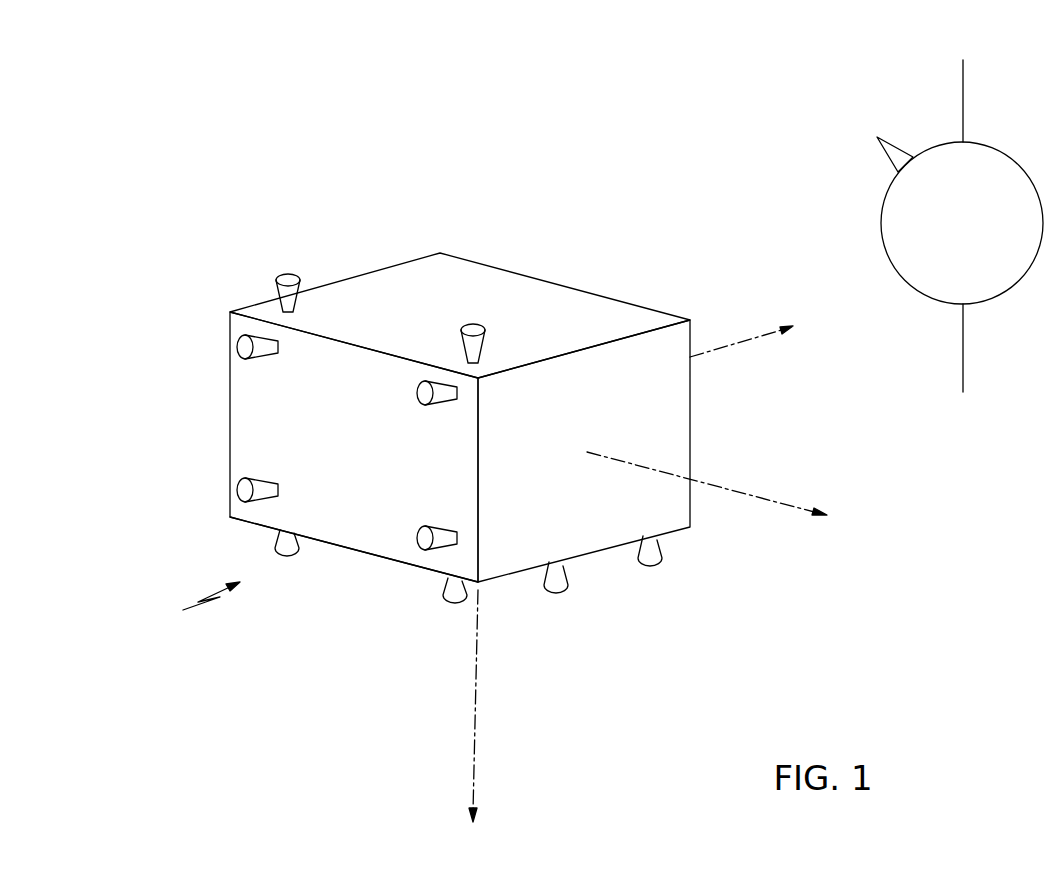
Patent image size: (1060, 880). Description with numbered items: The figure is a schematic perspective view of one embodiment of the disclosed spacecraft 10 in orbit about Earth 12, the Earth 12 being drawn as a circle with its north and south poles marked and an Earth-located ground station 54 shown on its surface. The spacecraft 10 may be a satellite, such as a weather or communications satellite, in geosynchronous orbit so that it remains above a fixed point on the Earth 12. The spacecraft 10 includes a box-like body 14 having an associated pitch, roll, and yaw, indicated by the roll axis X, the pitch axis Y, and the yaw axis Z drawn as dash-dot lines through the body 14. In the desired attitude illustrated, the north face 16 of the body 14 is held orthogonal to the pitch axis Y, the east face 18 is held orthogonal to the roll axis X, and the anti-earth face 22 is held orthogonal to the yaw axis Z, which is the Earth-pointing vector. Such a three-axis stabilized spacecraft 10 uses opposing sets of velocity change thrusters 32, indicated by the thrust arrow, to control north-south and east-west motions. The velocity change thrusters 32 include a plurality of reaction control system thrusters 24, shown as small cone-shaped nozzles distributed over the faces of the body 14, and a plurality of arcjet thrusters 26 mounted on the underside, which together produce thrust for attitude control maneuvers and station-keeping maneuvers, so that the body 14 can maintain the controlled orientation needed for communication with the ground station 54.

The spacecraft 10 is at (316, 156).
The Earth 12 is at (1011, 157).
The body 14 is at (230, 415).
The north face 16 is at (594, 306).
The east face 18 is at (648, 424).
The anti-earth face 22 is at (380, 540).
The reaction control system thrusters 24 is at (283, 275).
The arcjet thrusters 26 is at (556, 594).
The velocity change thrusters 32 is at (196, 603).
The ground station 54 is at (891, 162).